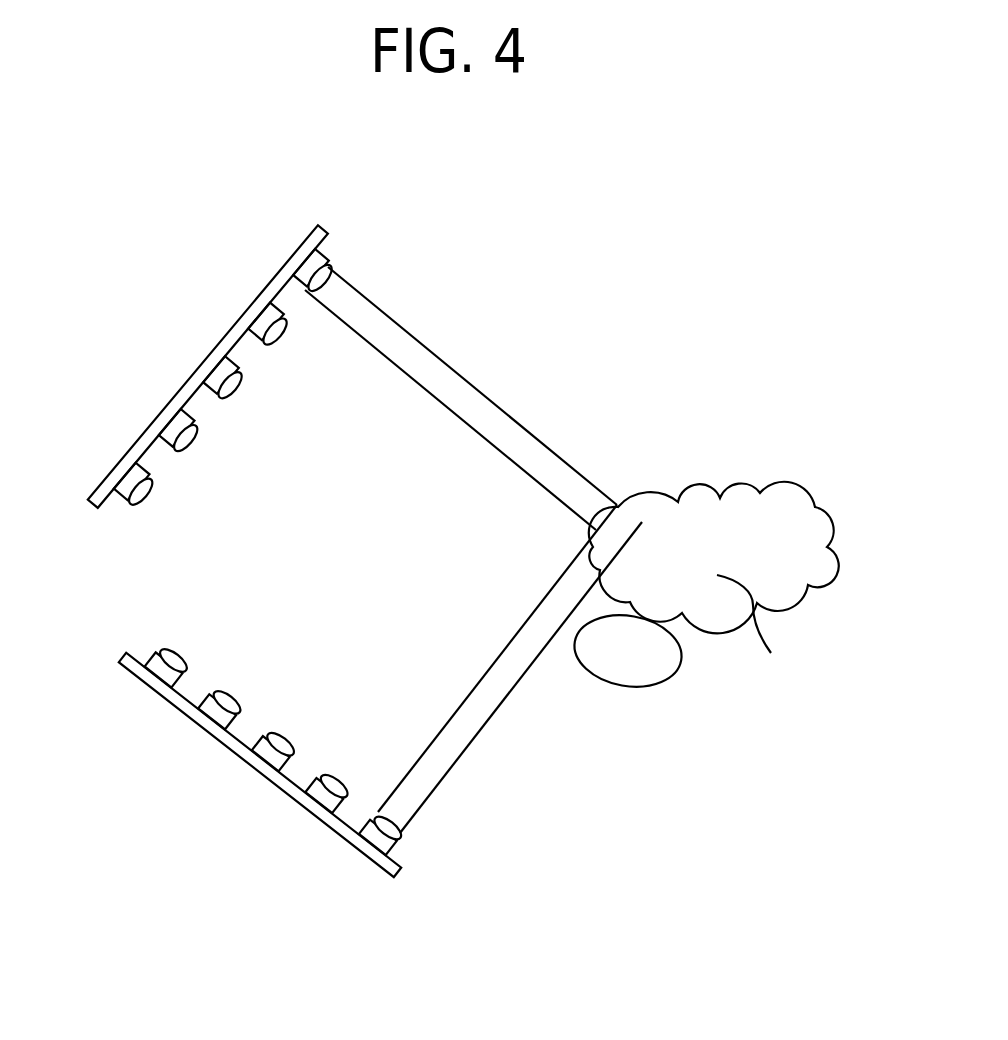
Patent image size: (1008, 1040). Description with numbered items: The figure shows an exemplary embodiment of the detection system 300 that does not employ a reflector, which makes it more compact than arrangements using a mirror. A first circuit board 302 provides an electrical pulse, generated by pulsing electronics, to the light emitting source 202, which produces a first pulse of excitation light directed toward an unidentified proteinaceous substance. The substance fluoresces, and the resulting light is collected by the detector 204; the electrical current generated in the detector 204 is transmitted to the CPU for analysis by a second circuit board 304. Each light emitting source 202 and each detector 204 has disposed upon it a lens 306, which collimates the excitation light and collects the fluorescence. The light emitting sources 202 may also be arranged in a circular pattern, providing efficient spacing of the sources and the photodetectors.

The detection system 300 is at (608, 307).
The first circuit board 302 is at (147, 434).
The second circuit board 304 is at (233, 745).
The light emitting source 202 is at (318, 255).
The detector 204 is at (406, 831).
The lens 306 is at (332, 268).